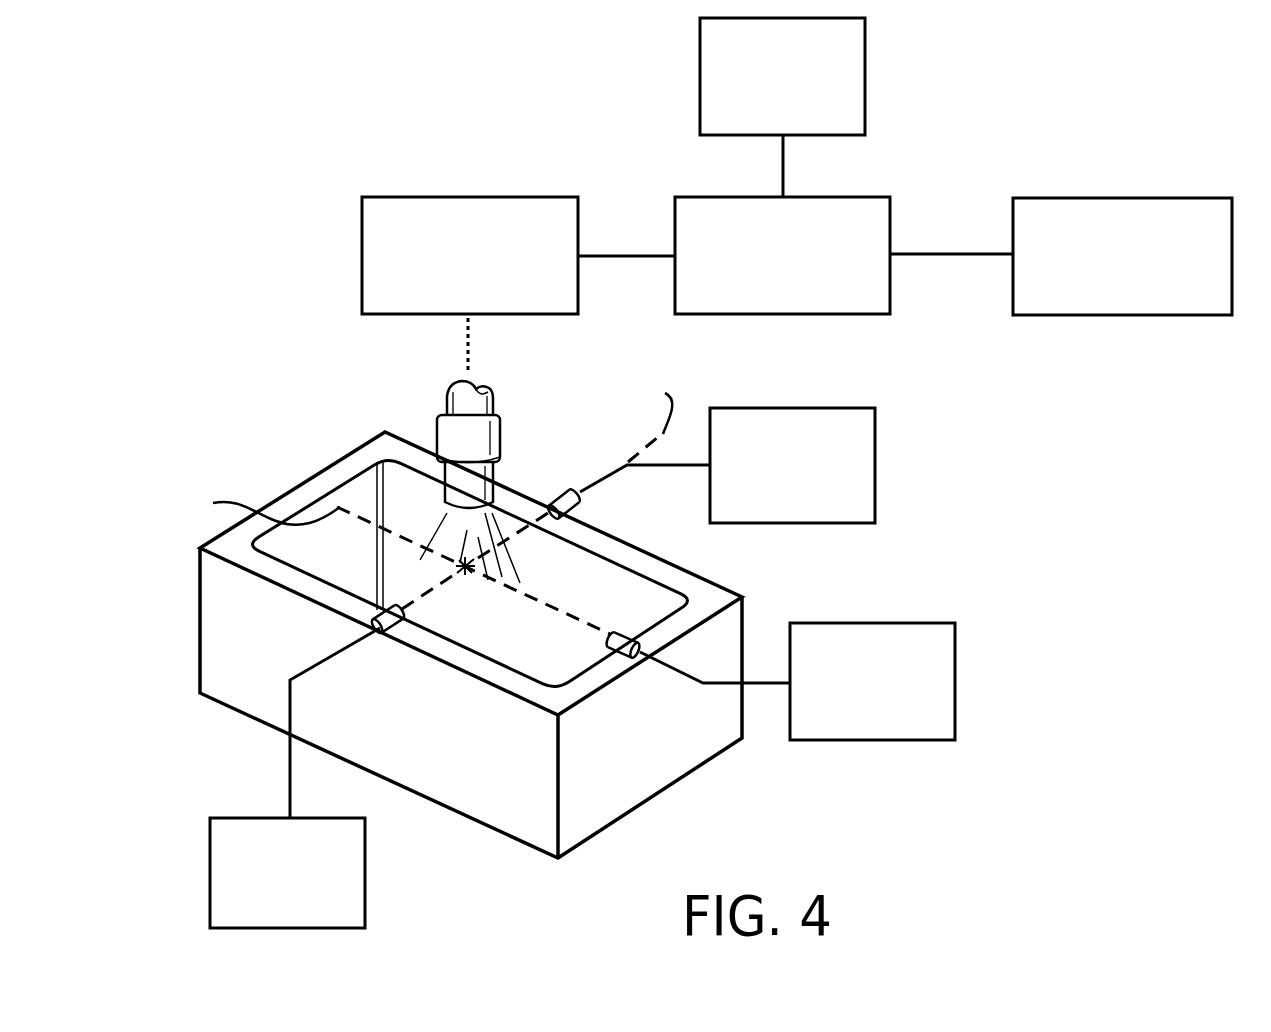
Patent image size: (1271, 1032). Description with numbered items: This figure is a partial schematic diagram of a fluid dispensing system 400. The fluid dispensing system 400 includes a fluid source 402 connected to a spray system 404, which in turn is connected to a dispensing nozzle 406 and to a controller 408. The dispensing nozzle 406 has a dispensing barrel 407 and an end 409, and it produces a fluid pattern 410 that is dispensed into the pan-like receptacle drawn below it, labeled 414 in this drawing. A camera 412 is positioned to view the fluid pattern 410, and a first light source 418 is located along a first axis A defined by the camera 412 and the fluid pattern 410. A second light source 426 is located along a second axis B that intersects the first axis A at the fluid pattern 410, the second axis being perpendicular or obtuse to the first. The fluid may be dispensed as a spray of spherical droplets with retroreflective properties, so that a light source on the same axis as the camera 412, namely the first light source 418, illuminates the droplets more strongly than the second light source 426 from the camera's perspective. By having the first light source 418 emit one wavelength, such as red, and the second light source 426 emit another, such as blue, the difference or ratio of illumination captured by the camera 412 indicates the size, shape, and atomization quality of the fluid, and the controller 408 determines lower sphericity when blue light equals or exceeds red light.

The fluid dispensing system 400 is at (191, 158).
The fluid source 402 is at (866, 77).
The spray system 404 is at (869, 197).
The dispensing nozzle 406 is at (362, 266).
The dispensing barrel 407 is at (458, 400).
The controller 408 is at (1194, 198).
The end 409 is at (502, 488).
The fluid pattern 410 is at (422, 504).
The camera 412 is at (210, 880).
The container 414 is at (270, 465).
The first light source 418 is at (877, 468).
The second light source 426 is at (955, 680).